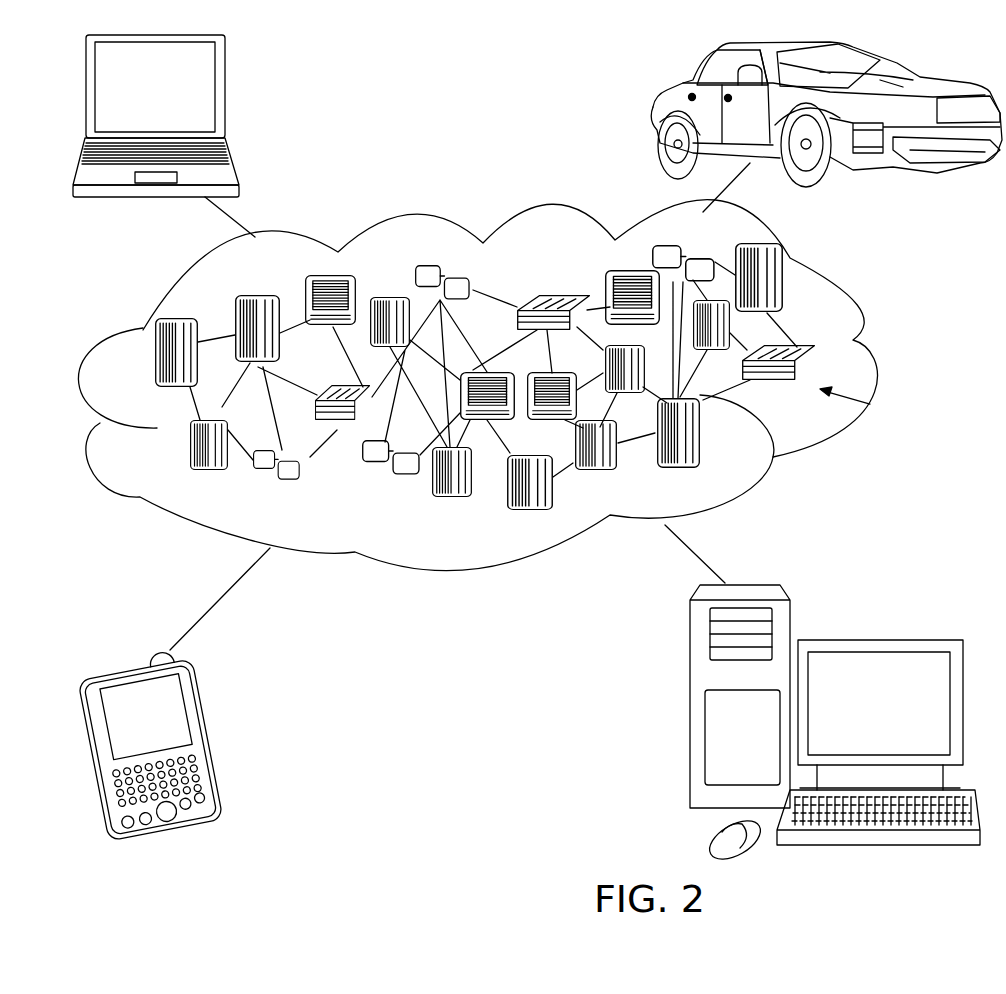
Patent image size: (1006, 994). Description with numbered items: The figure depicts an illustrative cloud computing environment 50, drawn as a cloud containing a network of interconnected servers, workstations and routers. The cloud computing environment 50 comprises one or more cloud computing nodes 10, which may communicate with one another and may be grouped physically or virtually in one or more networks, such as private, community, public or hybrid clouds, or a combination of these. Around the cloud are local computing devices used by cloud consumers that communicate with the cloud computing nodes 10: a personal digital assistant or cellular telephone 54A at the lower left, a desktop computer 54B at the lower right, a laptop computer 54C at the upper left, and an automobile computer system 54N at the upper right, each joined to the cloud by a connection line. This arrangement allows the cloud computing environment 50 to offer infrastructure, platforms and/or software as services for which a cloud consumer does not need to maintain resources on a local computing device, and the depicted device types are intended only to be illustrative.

The laptop computer 54C is at (225, 97).
The automobile computer system 54N is at (660, 115).
The personal digital assistant or cellular telephone 54A is at (215, 732).
The desktop computer 54B is at (878, 640).
The cloud computing environment 50 is at (507, 406).
The cloud computing node 10 is at (850, 412).